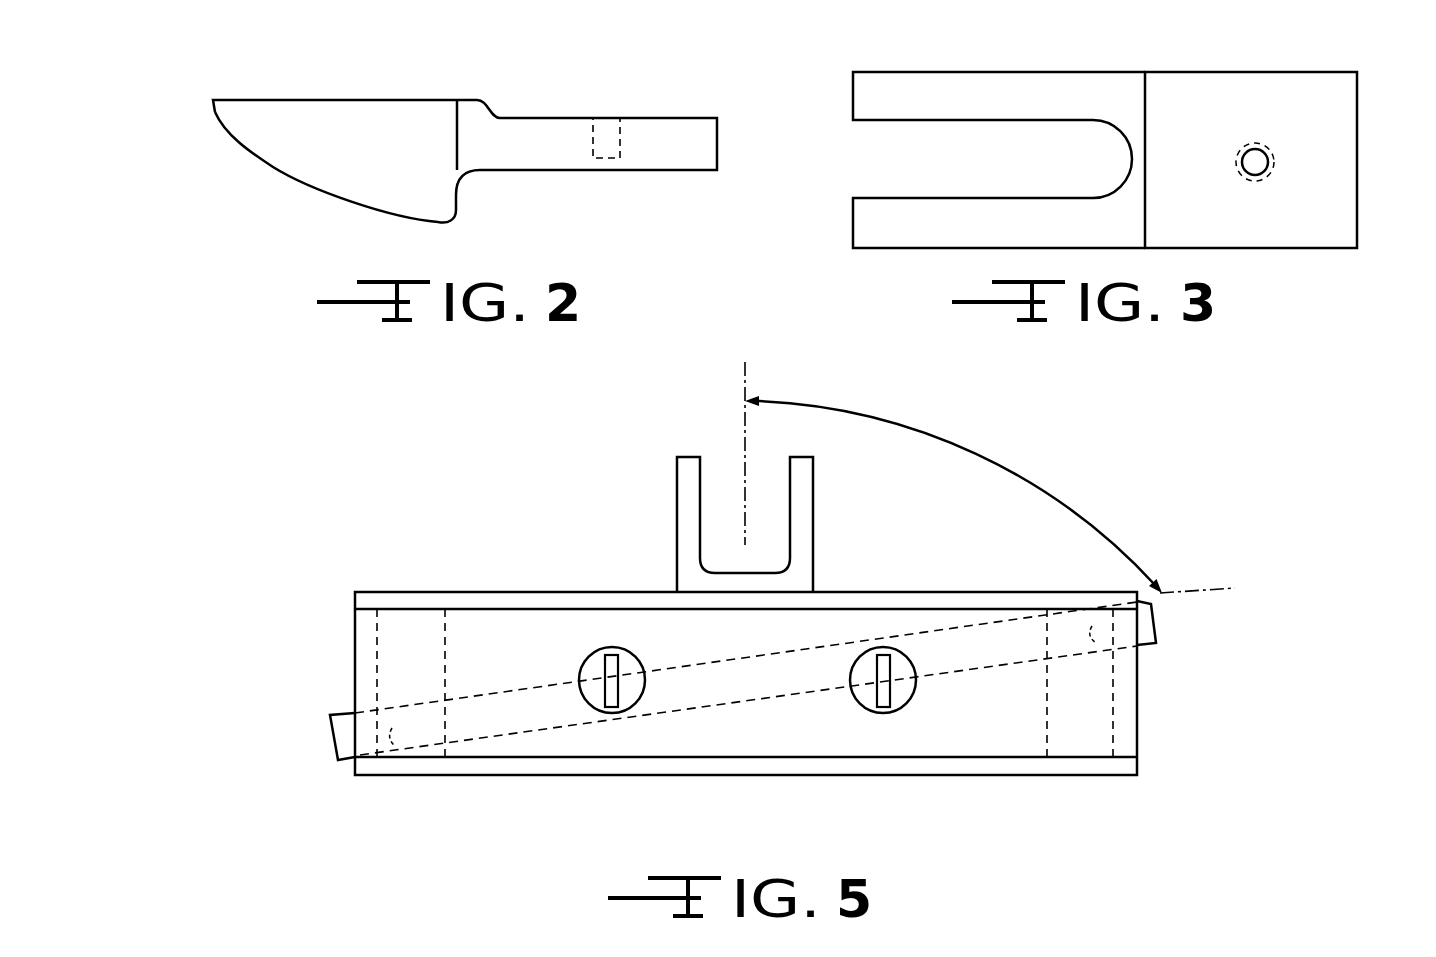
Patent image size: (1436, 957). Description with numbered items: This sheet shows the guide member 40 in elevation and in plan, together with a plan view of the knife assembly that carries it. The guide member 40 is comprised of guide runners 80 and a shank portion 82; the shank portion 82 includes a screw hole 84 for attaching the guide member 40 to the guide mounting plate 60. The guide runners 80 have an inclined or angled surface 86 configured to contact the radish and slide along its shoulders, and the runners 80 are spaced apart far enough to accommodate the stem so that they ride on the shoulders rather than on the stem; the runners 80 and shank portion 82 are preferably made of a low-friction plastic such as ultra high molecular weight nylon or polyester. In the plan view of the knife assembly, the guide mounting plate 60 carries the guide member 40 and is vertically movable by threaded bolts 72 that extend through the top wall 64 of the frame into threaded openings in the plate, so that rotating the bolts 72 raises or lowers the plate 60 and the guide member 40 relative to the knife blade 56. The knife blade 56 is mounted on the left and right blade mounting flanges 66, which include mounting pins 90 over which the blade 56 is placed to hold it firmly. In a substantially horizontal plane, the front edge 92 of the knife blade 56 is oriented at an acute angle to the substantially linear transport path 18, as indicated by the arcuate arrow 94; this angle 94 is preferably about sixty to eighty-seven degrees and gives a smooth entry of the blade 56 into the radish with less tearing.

In FIG. 5, the transport path 18 is at (745, 401).
In FIG. 2, the guide member 40 is at (432, 140).
In FIG. 3, the guide member 40 is at (1120, 133).
In FIG. 5, the guide member 40 is at (813, 527).
In FIG. 5, the knife blade 56 is at (437, 690).
In FIG. 5, the guide mounting plate 60 is at (913, 592).
In FIG. 5, the top wall 64 is at (613, 775).
In FIG. 5, the blade mounting flanges 66 is at (457, 609).
In FIG. 5, the threaded bolts 72 is at (607, 648).
In FIG. 2, the guide runners 80 is at (335, 92).
In FIG. 3, the guide runners 80 is at (983, 72).
In FIG. 2, the shank portion 82 is at (698, 170).
In FIG. 3, the shank portion 82 is at (1247, 72).
In FIG. 2, the screw hole 84 is at (602, 118).
In FIG. 3, the screw hole 84 is at (1278, 156).
In FIG. 2, the inclined surface 86 is at (273, 167).
In FIG. 5, the mounting pins 90 is at (397, 780).
In FIG. 5, the front edge 92 is at (992, 592).
In FIG. 5, the arcuate arrow 94 is at (960, 447).